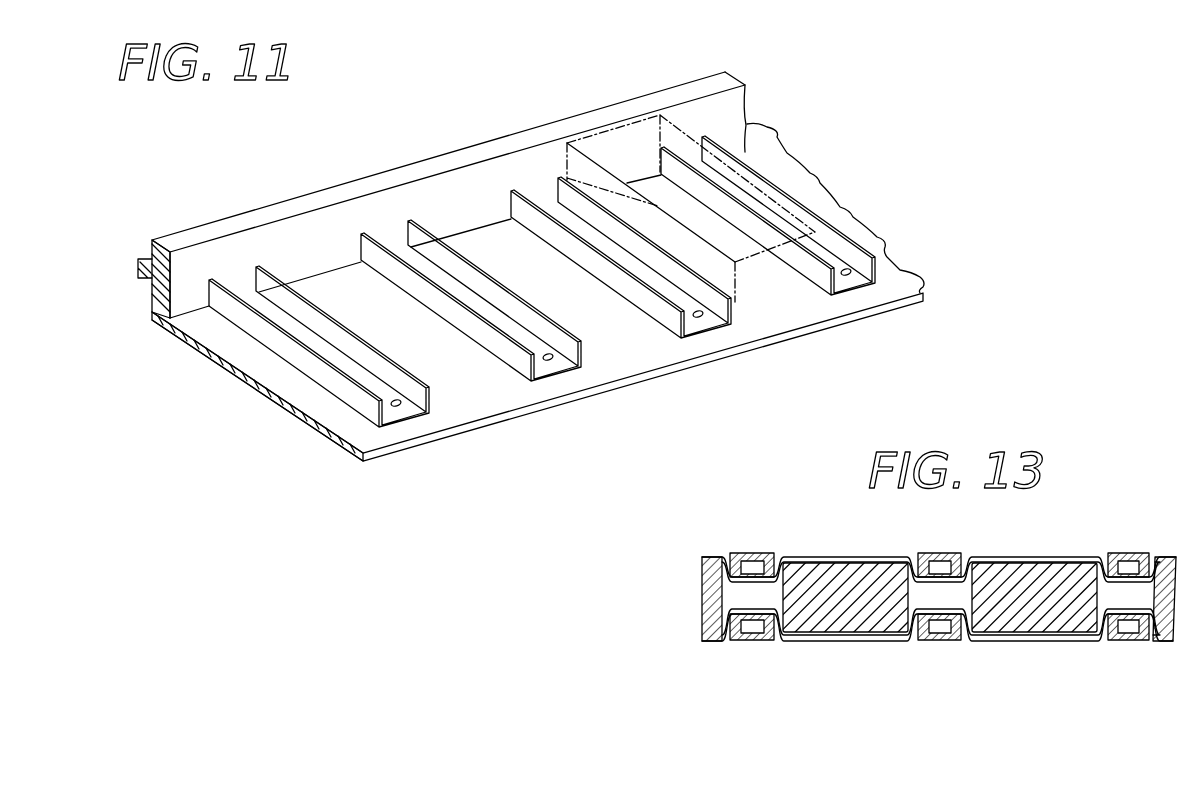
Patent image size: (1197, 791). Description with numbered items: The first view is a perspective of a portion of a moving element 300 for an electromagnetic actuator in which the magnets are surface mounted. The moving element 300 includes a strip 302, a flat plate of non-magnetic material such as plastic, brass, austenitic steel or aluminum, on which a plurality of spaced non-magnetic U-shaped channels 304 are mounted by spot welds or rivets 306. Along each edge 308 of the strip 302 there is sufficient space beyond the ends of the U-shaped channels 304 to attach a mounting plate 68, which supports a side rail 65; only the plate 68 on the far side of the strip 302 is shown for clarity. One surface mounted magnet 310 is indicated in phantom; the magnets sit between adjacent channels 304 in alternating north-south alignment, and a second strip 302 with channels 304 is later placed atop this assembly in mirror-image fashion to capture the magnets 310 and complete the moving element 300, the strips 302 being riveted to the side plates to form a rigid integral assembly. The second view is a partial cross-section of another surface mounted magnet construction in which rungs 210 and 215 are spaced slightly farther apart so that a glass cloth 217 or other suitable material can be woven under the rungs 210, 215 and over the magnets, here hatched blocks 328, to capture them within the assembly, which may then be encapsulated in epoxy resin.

In FIG. 11, the moving element 300 is at (862, 185).
In FIG. 11, the strip 302 is at (763, 327).
In FIG. 11, the U-shaped channels 304 is at (391, 355).
In FIG. 11, the spot welds or rivets 306 is at (399, 407).
In FIG. 11, the edge 308 is at (183, 332).
In FIG. 11, the surface mounted magnet 310 is at (623, 153).
In FIG. 11, the mounting plate 68 is at (233, 222).
In FIG. 11, the side rail 65 is at (142, 270).
In FIG. 13, the rung 215 is at (745, 553).
In FIG. 13, the rung 210 is at (752, 645).
In FIG. 13, the block 328 is at (827, 583).
In FIG. 13, the glass cloth 217 is at (1027, 640).